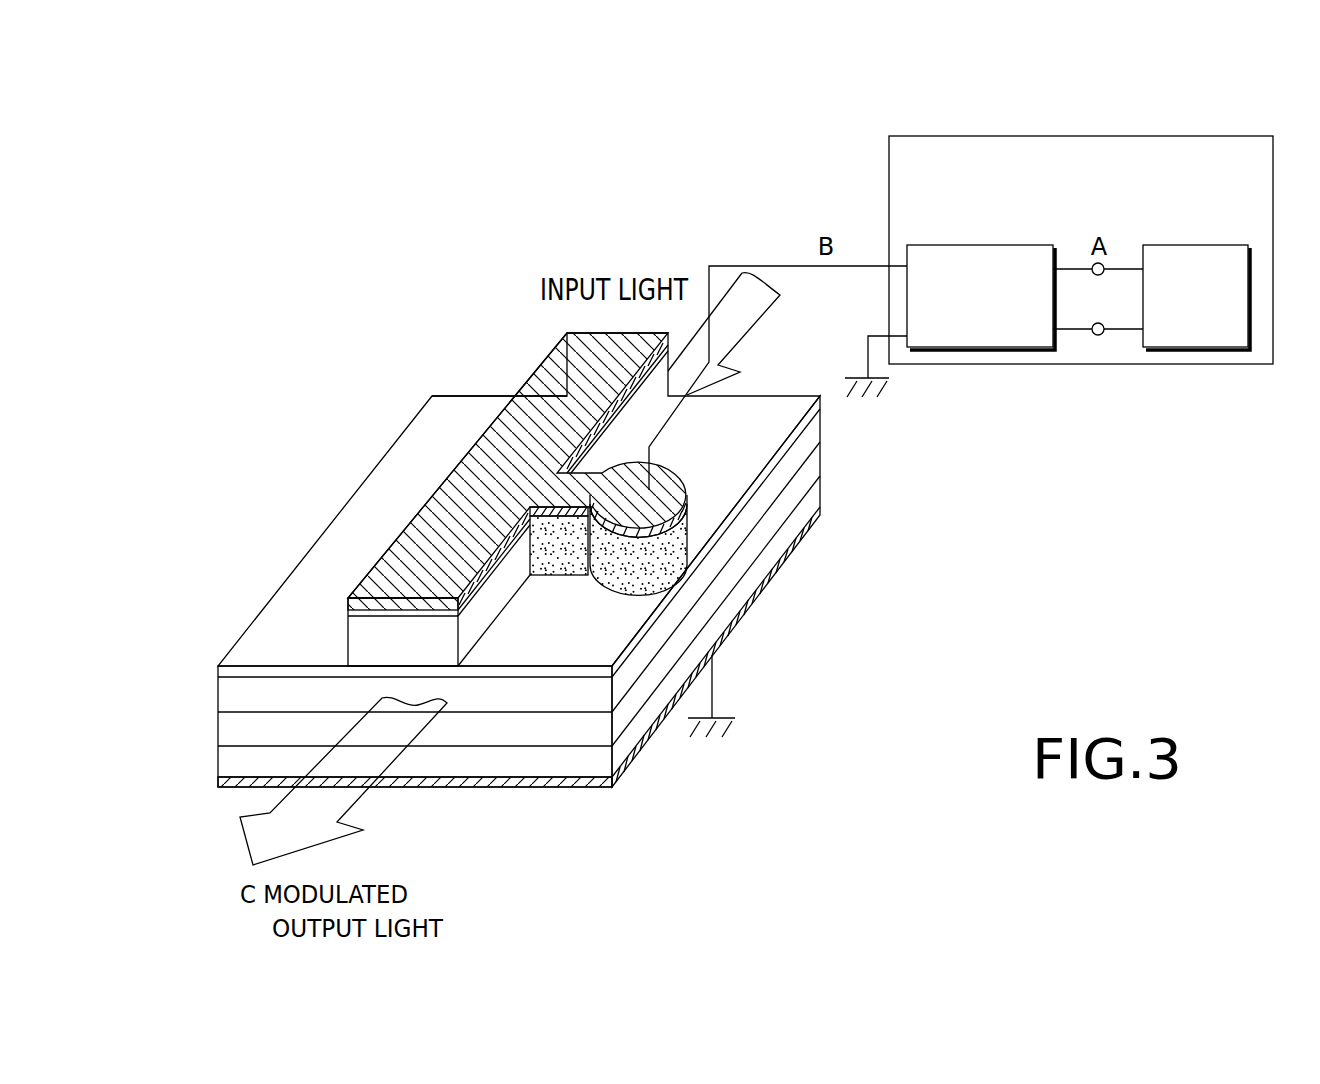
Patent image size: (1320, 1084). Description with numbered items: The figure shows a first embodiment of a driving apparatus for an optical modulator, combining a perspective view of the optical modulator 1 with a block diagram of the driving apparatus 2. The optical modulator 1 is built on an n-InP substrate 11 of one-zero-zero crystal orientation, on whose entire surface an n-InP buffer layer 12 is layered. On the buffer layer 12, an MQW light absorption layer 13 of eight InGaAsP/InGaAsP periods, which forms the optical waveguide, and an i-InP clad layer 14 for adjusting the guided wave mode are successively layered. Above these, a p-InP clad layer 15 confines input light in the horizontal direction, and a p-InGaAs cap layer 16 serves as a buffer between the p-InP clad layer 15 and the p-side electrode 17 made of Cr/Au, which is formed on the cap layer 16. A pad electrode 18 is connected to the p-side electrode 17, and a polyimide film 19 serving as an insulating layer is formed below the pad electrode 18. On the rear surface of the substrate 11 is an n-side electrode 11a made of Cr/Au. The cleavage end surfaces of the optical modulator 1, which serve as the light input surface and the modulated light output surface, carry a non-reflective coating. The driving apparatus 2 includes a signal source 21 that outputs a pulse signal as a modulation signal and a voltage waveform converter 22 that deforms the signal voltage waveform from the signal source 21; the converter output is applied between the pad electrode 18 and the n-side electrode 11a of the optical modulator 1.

The optical modulator 1 is at (842, 508).
The driving apparatus 2 is at (1011, 136).
The n-InP substrate 11 is at (592, 762).
The n-side electrode 11a is at (746, 598).
The n-InP buffer layer 12 is at (533, 735).
The MQW light absorption layer 13 is at (595, 697).
The i-InP clad layer 14 is at (647, 622).
The p-InP clad layer 15 is at (375, 644).
The p-InGaAs cap layer 16 is at (347, 616).
The p-side electrode 17 is at (568, 372).
The pad electrode 18 is at (682, 478).
The polyimide film 19 is at (686, 530).
The signal source 21 is at (1183, 245).
The voltage waveform converter 22 is at (970, 245).